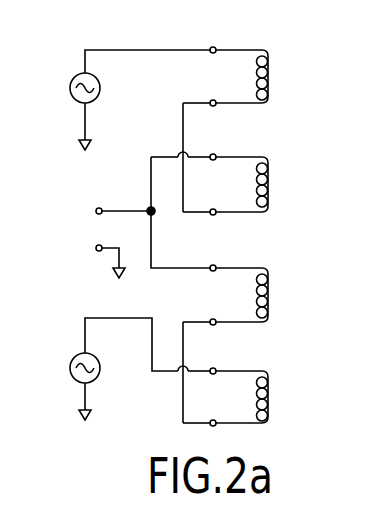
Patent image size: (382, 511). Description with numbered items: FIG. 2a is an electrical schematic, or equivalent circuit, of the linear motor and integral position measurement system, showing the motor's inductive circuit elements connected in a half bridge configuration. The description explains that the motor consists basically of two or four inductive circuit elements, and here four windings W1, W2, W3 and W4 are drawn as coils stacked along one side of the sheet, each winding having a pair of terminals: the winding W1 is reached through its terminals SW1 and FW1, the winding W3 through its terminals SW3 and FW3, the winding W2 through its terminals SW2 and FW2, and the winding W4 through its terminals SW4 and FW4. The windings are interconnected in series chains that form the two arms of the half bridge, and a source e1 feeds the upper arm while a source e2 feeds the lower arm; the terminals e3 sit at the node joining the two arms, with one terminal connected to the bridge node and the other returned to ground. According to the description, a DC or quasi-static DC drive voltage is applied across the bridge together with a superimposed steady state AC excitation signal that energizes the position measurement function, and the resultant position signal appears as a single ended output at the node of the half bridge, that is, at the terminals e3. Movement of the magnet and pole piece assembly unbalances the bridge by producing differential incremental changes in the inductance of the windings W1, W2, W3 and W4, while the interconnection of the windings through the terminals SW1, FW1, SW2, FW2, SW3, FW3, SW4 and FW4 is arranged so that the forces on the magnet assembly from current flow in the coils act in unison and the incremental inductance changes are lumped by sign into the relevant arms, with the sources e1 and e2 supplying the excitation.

The first AC voltage source e1 is at (126, 100).
The second AC voltage source e2 is at (126, 369).
The third voltage source terminals e3 is at (107, 242).
The start terminal of winding W1 SW1 is at (227, 35).
The finish terminal of winding W1 FW1 is at (215, 90).
The first winding W1 is at (262, 76).
The start terminal of winding W2 SW2 is at (227, 255).
The finish terminal of winding W2 FW2 is at (215, 309).
The second winding W2 is at (262, 295).
The start terminal of winding W3 SW3 is at (199, 144).
The finish terminal of winding W3 FW3 is at (215, 199).
The third winding W3 is at (262, 184).
The start terminal of winding W4 SW4 is at (227, 358).
The finish terminal of winding W4 FW4 is at (215, 410).
The fourth winding W4 is at (262, 397).